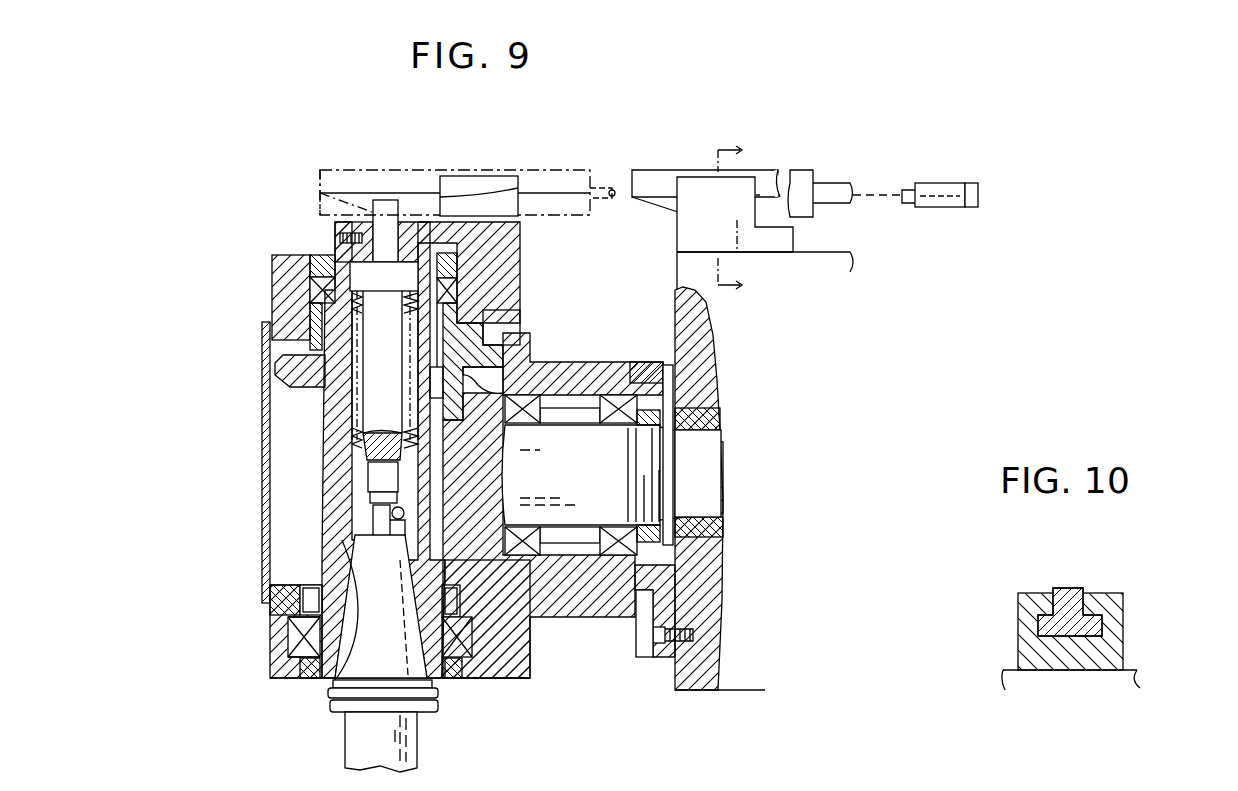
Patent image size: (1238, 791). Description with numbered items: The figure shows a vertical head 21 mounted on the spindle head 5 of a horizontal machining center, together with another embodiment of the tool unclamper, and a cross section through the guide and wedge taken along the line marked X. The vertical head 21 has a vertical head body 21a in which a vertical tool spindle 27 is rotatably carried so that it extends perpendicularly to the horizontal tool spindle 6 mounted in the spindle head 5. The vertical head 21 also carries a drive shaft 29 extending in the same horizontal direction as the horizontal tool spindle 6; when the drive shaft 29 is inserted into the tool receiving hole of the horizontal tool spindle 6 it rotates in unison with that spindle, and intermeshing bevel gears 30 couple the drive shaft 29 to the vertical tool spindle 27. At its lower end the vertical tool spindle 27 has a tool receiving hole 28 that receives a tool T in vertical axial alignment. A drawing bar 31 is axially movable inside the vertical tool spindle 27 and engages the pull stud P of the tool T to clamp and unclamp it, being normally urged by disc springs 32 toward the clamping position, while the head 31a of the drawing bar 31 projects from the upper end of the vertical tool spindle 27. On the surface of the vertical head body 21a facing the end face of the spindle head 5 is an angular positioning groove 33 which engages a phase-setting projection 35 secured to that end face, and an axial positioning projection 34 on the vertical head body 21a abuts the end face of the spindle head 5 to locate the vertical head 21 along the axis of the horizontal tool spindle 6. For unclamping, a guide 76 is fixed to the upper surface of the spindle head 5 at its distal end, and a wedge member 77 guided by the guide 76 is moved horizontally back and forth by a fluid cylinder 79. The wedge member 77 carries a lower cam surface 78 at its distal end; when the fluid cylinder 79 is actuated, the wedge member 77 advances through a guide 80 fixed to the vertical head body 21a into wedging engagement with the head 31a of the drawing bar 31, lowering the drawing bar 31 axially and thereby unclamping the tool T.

In FIG. 9, the vertical head 21 is at (248, 282).
In FIG. 9, the vertical head body 21a is at (585, 372).
In FIG. 9, the vertical tool spindle 27 is at (336, 494).
In FIG. 9, the tool receiving hole 28 is at (340, 682).
In FIG. 9, the drive shaft 29 is at (585, 520).
In FIG. 9, the bevel gears 30 is at (478, 398).
In FIG. 9, the drawing bar 31 is at (377, 393).
In FIG. 9, the head of the drawing bar 31a is at (385, 200).
In FIG. 9, the disc springs 32 is at (345, 322).
In FIG. 9, the angular positioning groove 33 is at (645, 605).
In FIG. 9, the axial positioning projection 34 is at (669, 356).
In FIG. 9, the phase-setting projection 35 is at (655, 600).
In FIG. 9, the spindle head 5 is at (740, 692).
In FIG. 10, the spindle head 5 is at (1127, 687).
In FIG. 9, the horizontal tool spindle 6 is at (702, 426).
In FIG. 9, the guide 76 is at (700, 190).
In FIG. 10, the guide 76 is at (1125, 633).
In FIG. 9, the wedge member 77 is at (436, 180).
In FIG. 10, the wedge member 77 is at (1070, 597).
In FIG. 9, the lower cam surface 78 is at (322, 204).
In FIG. 9, the fluid cylinder 79 is at (960, 182).
In FIG. 9, the guide 80 is at (522, 240).
In FIG. 9, the pull stud P is at (330, 548).
In FIG. 9, the tool T is at (403, 742).